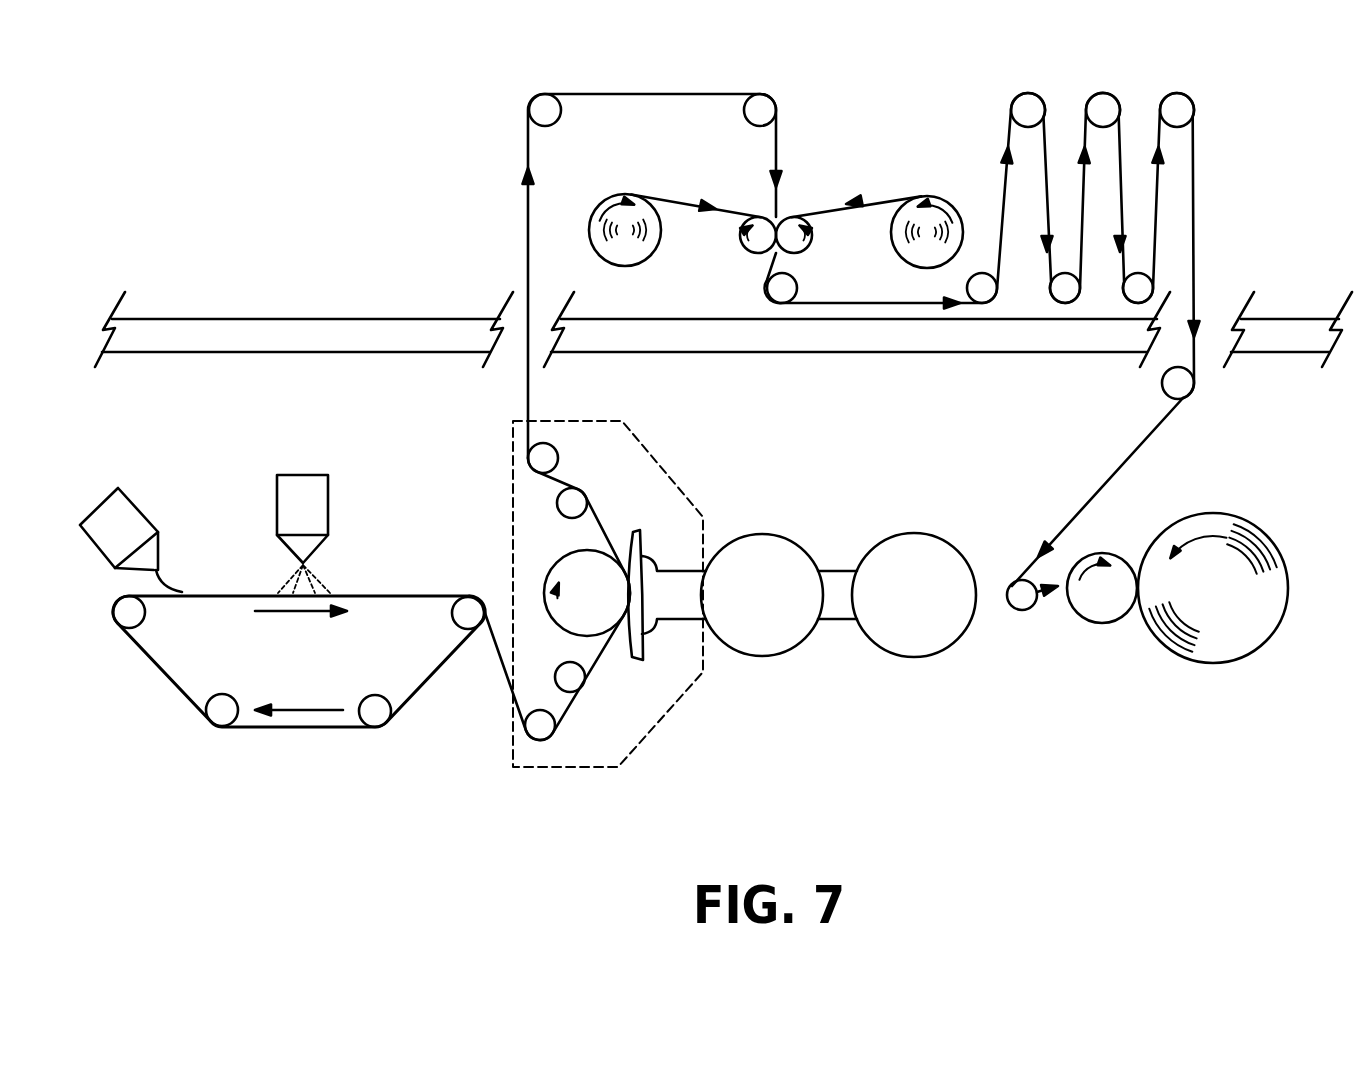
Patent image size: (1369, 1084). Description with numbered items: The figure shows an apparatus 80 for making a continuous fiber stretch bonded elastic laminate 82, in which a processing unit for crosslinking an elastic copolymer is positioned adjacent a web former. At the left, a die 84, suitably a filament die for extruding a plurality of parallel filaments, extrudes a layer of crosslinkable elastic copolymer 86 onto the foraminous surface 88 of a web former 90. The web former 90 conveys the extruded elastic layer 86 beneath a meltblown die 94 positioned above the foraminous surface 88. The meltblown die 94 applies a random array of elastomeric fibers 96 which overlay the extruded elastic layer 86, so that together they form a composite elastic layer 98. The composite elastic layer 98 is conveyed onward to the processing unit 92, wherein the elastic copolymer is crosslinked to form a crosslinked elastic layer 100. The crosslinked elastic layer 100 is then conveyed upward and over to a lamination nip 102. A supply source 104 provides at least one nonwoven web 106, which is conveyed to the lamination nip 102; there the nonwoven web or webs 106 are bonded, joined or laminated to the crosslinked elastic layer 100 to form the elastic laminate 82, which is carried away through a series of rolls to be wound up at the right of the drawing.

The apparatus 80 is at (974, 755).
The continuous fiber stretch bonded elastic laminate 82 is at (1128, 466).
The die 84 is at (135, 515).
The layer of crosslinkable elastic copolymer 86 is at (164, 579).
The foraminous surface 88 is at (165, 598).
The web former 90 is at (128, 688).
The processing unit 92 is at (766, 684).
The meltblown die 94 is at (302, 474).
The elastomeric fibers 96 is at (345, 554).
The composite elastic layer 98 is at (503, 673).
The crosslinked elastic layer 100 is at (525, 233).
The lamination nip 102 is at (730, 274).
The supply source 104 is at (603, 262).
The nonwoven web 106 is at (670, 196).